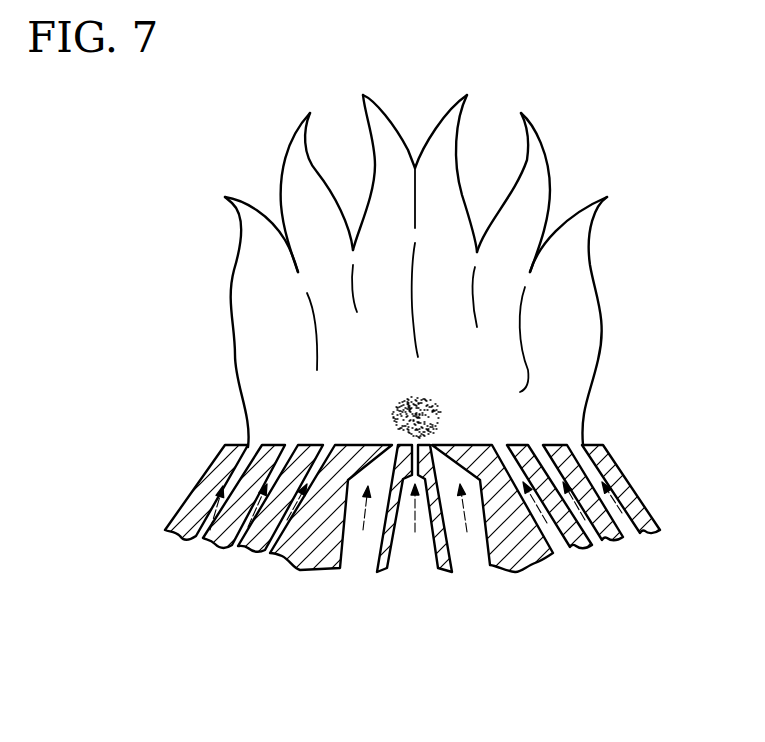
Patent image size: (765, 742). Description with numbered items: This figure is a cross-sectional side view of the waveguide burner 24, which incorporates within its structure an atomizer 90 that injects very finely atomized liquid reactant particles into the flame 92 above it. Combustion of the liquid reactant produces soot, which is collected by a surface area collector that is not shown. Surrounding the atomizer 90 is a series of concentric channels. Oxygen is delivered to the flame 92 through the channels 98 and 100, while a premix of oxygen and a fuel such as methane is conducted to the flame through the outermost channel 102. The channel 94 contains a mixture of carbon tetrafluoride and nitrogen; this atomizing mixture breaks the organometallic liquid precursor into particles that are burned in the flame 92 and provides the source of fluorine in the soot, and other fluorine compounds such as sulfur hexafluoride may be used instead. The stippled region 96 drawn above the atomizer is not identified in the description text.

The burner 24 is at (228, 164).
The flame 92 is at (270, 328).
The ignition region 96 is at (427, 397).
The atomizer 90 is at (412, 447).
The channel 94 is at (363, 528).
The channel 98 is at (265, 550).
The channel 100 is at (232, 542).
The outermost channel 102 is at (193, 538).